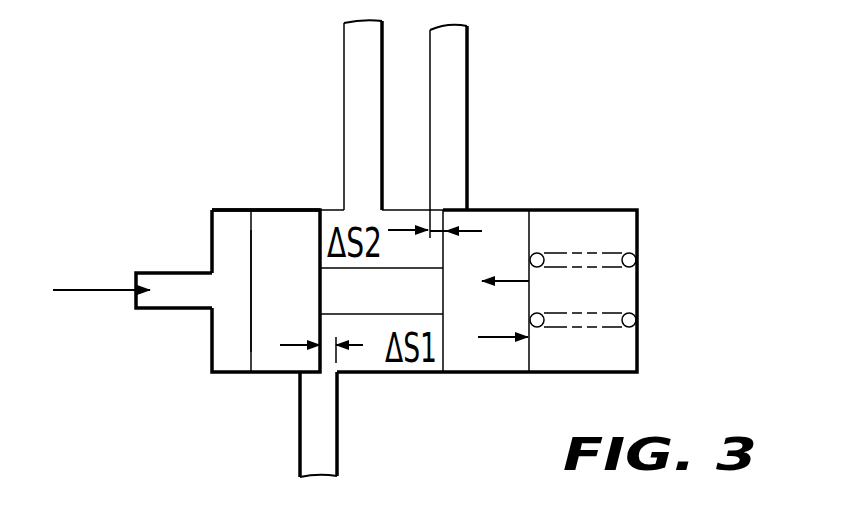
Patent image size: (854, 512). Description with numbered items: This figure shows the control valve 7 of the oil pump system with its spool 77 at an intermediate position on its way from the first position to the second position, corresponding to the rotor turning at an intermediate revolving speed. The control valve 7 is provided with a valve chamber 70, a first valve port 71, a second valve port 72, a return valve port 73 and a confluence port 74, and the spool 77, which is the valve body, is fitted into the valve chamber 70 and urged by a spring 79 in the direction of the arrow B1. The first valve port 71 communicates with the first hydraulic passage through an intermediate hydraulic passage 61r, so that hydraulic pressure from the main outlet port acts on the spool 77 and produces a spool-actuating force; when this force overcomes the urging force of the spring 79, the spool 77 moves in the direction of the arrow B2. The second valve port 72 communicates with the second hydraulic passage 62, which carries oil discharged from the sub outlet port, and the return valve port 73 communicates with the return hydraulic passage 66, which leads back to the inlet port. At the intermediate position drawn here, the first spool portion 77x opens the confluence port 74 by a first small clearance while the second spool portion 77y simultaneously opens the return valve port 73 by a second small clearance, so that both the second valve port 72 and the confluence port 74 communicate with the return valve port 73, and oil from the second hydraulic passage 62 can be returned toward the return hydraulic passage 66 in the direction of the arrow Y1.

The control valve 7 is at (188, 363).
The intermediate hydraulic passage 61r is at (165, 271).
The second hydraulic passage 62 is at (345, 70).
The return hydraulic passage 66 is at (468, 60).
The valve chamber 70 is at (615, 350).
The first valve port 71 is at (168, 309).
The second valve port 72 is at (368, 208).
The return valve port 73 is at (437, 210).
The confluence port 74 is at (338, 425).
The spool 77 is at (297, 350).
The first spool portion 77x is at (278, 336).
The second spool portion 77y is at (532, 222).
The spring 79 is at (637, 318).
The arrow B1 is at (513, 278).
The arrow B2 is at (487, 341).
The arrow Y1 is at (373, 135).